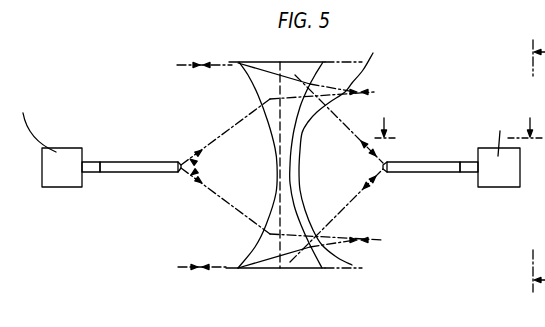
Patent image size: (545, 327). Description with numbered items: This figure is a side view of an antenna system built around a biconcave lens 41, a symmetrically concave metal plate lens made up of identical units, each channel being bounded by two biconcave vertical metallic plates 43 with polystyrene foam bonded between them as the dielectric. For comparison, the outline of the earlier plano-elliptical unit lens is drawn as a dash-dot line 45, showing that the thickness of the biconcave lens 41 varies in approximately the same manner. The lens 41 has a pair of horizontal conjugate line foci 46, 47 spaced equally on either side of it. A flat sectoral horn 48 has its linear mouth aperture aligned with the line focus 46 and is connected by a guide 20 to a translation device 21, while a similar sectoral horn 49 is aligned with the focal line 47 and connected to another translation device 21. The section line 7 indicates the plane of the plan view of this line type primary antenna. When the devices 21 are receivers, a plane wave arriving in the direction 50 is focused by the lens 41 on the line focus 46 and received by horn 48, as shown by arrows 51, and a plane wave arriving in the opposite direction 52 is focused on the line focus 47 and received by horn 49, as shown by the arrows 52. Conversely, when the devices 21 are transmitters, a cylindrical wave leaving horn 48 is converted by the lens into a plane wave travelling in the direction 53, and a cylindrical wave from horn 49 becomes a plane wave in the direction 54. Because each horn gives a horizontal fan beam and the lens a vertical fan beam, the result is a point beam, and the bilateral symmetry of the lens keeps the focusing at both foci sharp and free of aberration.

The section line of Fig. 7 is at (460, 166).
The guide 20 is at (465, 173).
The translation device 21 is at (77, 152).
The biconcave lens 41 is at (312, 258).
The biconcave vertical metallic plates 43 is at (264, 61).
The dash-dot line 45 is at (350, 266).
The line focus 46 is at (387, 160).
The line focus 47 is at (182, 162).
The sectoral horn 48 is at (409, 173).
The sectoral horn 49 is at (116, 160).
The direction of incoming plane wave 50 is at (182, 68).
The arrows 51 is at (370, 153).
The opposite direction / arrows 52 is at (184, 164).
The direction of outgoing plane wave 53 is at (222, 65).
The direction of outgoing plane wave 54 is at (343, 241).